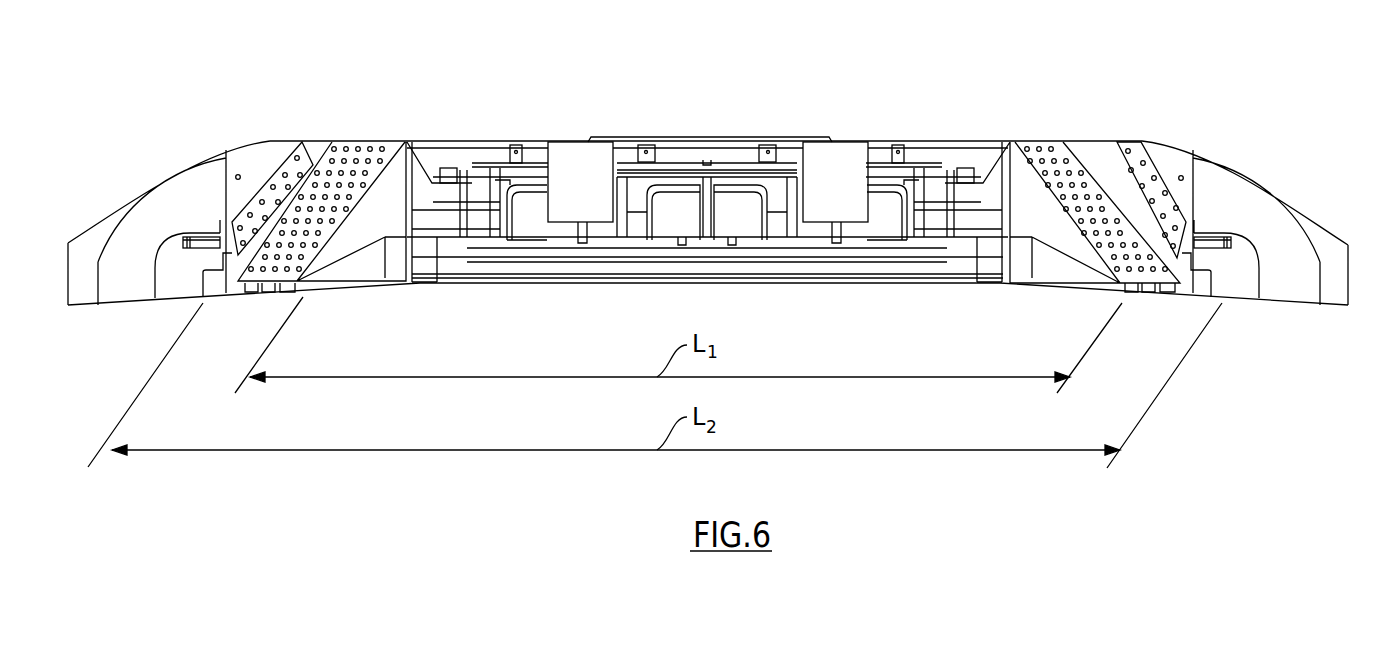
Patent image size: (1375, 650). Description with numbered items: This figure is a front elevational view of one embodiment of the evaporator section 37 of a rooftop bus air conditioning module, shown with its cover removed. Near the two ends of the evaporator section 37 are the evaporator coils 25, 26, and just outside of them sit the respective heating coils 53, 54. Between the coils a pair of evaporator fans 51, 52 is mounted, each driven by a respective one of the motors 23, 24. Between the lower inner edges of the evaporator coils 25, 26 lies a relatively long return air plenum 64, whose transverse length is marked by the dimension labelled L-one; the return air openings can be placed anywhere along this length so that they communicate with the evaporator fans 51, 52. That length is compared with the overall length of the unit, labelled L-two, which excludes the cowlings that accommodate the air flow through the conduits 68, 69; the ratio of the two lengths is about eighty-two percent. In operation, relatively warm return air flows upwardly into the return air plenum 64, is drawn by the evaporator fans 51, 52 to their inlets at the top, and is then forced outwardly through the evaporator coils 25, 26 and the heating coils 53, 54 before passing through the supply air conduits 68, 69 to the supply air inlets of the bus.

The motor 23 is at (573, 160).
The motor 24 is at (840, 165).
The evaporator coil 25 is at (358, 162).
The evaporator coil 26 is at (1080, 160).
The evaporator section 37 is at (940, 100).
The evaporator fan 51 is at (546, 203).
The evaporator fan 52 is at (880, 207).
The heating coil 53 is at (269, 183).
The heating coil 54 is at (1147, 180).
The return air plenum 64 is at (790, 306).
The supply air conduit 68 is at (100, 262).
The supply air conduit 69 is at (1297, 225).